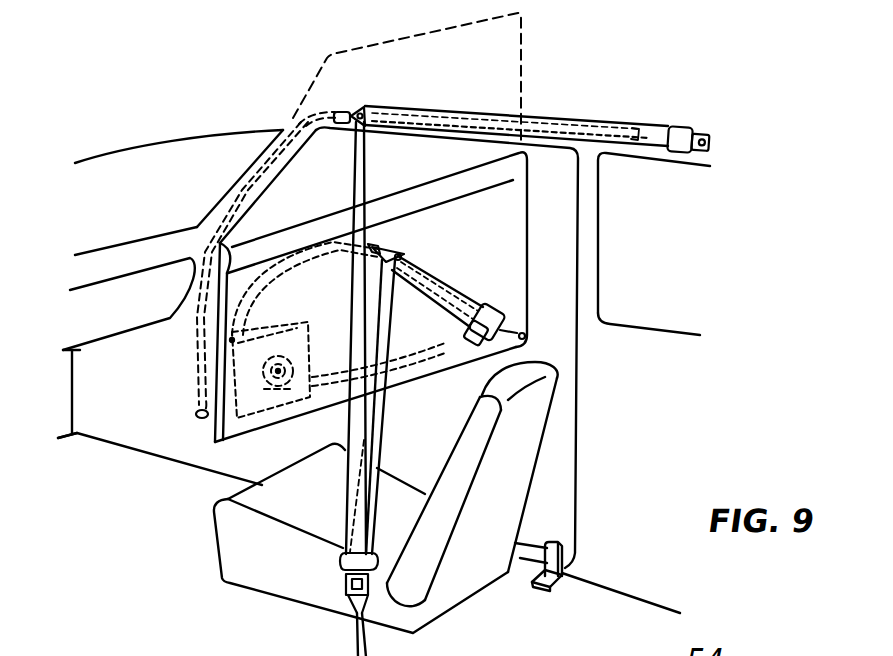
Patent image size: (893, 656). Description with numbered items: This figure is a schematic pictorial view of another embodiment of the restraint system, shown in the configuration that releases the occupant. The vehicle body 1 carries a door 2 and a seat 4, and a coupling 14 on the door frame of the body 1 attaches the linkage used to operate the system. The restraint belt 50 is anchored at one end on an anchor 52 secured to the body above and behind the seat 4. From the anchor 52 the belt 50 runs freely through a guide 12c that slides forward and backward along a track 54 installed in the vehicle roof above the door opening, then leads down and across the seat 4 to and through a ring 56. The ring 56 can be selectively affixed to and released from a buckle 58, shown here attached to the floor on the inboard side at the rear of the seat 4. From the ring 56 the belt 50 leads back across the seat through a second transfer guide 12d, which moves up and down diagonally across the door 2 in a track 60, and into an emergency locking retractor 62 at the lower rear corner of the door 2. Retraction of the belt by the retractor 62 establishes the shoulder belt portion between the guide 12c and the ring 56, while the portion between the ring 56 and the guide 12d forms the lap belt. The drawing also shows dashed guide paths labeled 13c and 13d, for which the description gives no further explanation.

The body 1 is at (120, 422).
The door 2 is at (510, 210).
The seat 4 is at (233, 553).
The guide 12c is at (363, 106).
The second transfer guide 12d is at (400, 249).
The belt guide track in pillar 13c is at (293, 118).
The belt guide track in door 13d is at (287, 272).
The coupling 14 is at (202, 410).
The restraint belt 50 is at (366, 181).
The anchor 52 is at (684, 127).
The track 54 is at (586, 118).
The ring 56 is at (342, 562).
The buckle 58 is at (356, 633).
The track 60 is at (450, 286).
The emergency locking retractor 62 is at (502, 312).